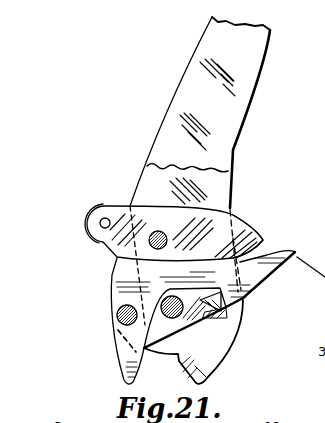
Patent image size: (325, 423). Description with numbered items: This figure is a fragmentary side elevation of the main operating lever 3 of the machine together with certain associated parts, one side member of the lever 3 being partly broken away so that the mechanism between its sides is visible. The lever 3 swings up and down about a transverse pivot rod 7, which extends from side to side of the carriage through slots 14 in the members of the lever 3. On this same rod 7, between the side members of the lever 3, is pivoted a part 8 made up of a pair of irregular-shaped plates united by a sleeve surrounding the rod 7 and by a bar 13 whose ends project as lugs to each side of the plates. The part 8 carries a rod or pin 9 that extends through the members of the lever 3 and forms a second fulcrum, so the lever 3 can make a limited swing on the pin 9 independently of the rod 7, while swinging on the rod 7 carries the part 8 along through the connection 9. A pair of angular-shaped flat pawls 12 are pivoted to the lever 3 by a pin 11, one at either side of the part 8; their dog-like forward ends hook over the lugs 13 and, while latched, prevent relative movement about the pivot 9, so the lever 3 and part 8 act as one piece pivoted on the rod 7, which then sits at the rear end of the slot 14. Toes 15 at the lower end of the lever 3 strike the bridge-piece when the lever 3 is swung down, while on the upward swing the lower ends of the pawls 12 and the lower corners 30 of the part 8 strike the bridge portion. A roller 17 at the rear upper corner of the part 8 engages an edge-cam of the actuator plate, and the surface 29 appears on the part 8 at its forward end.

The lever 3 is at (190, 90).
The pivot rod 7 is at (180, 313).
The part 8 is at (183, 218).
The rod or pin 9 is at (152, 233).
The rod or pin 11 is at (118, 313).
The pawls 12 is at (138, 272).
The bar 13 is at (224, 316).
The slots 14 is at (203, 318).
The toes 15 is at (194, 373).
The roller 17 is at (89, 213).
The cam nose 29 is at (259, 237).
The lower corners 30 is at (128, 350).